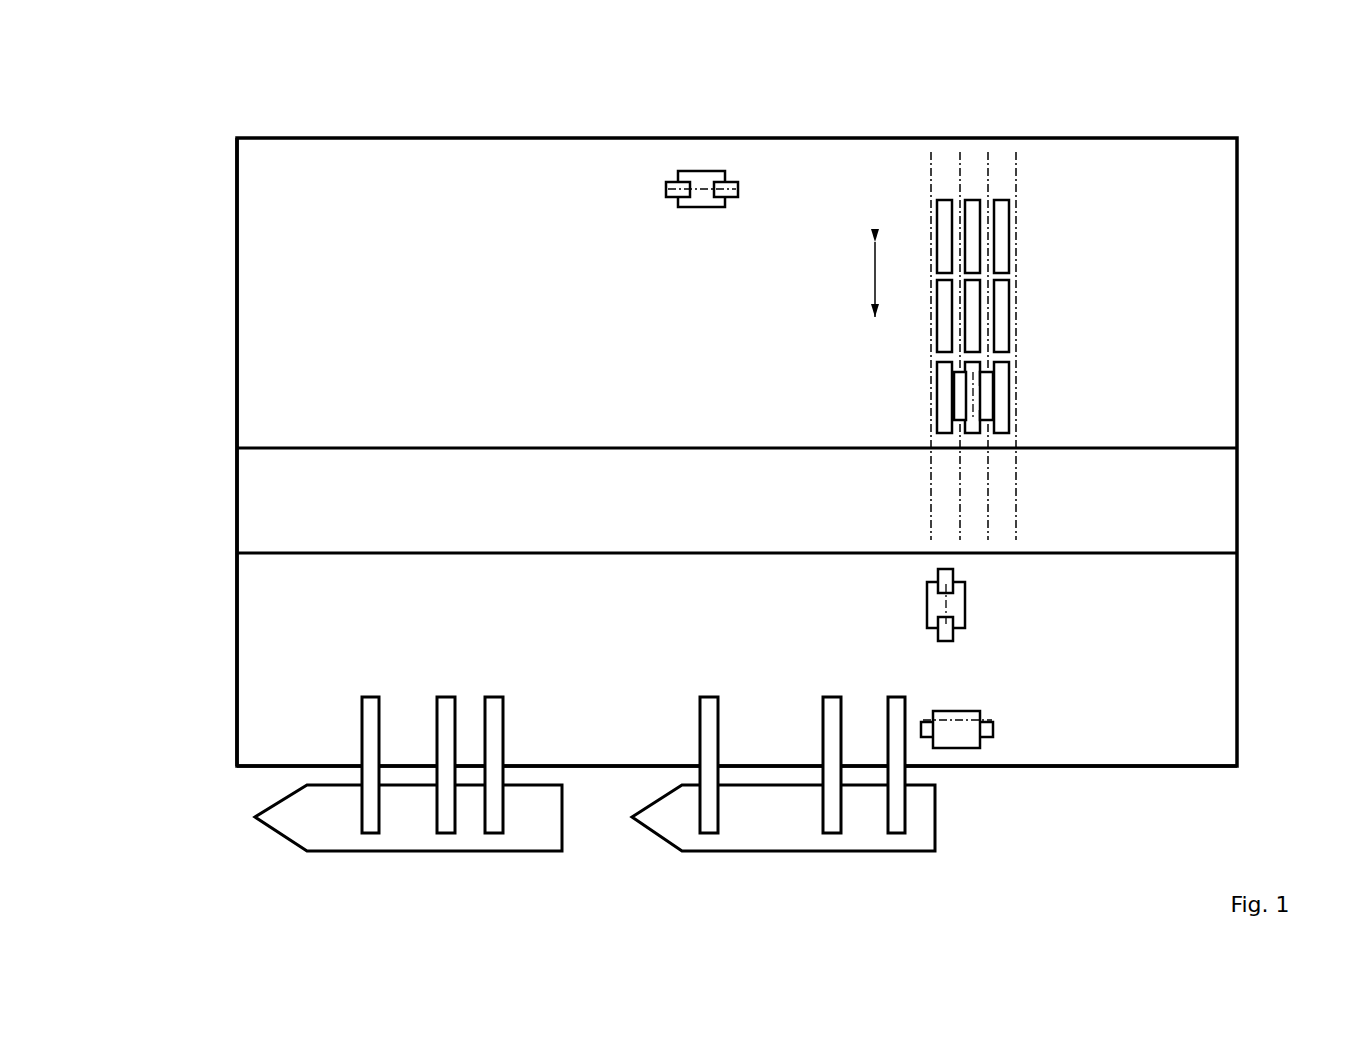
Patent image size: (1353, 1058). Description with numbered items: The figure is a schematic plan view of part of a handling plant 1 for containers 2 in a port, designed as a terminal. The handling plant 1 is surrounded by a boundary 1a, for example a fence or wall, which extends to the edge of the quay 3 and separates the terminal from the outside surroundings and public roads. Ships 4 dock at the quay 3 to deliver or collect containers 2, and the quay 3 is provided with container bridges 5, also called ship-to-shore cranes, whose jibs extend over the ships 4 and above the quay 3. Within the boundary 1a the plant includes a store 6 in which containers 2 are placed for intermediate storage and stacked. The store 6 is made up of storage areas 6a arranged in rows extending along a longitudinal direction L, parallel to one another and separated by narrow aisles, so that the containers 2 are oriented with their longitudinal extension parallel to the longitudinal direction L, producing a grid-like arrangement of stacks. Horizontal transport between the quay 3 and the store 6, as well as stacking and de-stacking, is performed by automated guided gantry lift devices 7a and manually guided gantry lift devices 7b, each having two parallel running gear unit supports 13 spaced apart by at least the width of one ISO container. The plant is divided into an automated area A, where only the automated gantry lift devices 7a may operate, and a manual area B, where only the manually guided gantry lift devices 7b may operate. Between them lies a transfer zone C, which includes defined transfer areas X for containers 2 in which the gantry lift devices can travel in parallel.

The handling plant 1 is at (254, 122).
The boundary 1a is at (236, 173).
The container 2 is at (1007, 213).
The quay 3 is at (604, 720).
The ship 4 is at (323, 818).
The container bridge 5 is at (372, 789).
The store 6 is at (1028, 228).
The storage area 6a is at (1002, 160).
The automated guided gantry lift device 7a is at (706, 186).
The manually guided gantry lift device 7b is at (958, 736).
The running gear unit support 13 is at (940, 917).
The automated area A is at (1195, 336).
The manual area B is at (1195, 668).
The transfer zone C is at (1195, 466).
The transfer area X is at (1005, 500).
The longitudinal direction L is at (864, 279).